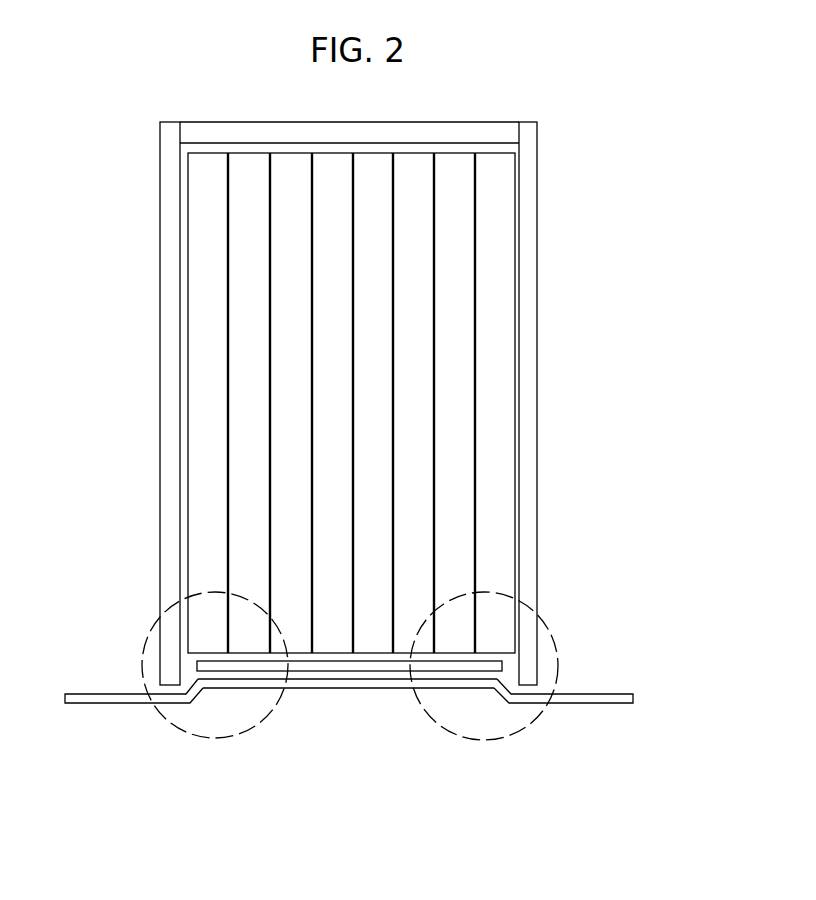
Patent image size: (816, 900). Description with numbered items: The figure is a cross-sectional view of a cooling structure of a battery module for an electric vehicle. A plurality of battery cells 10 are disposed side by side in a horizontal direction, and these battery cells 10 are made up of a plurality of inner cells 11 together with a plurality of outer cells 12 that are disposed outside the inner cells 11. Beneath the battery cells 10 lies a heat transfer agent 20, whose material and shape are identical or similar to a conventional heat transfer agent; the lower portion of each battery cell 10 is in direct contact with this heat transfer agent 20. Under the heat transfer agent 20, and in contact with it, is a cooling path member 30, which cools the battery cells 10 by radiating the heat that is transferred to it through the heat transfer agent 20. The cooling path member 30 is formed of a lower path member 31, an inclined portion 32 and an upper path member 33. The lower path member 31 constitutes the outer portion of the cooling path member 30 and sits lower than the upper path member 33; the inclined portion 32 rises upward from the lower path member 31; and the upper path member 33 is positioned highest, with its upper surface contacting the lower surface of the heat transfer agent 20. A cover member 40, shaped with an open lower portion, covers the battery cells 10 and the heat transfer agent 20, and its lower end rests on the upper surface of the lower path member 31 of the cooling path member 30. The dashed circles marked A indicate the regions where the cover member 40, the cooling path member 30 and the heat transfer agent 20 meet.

The battery cells 10 is at (439, 403).
The inner cells 11 is at (448, 412).
The outer cells 12 is at (495, 463).
The heat transfer agent 20 is at (213, 665).
The cooling path member 30 is at (349, 769).
The lower path member 31 is at (122, 705).
The inclined portion 32 is at (203, 707).
The upper path member 33 is at (446, 736).
The cover member 40 is at (170, 328).
The detail region A is at (555, 640).